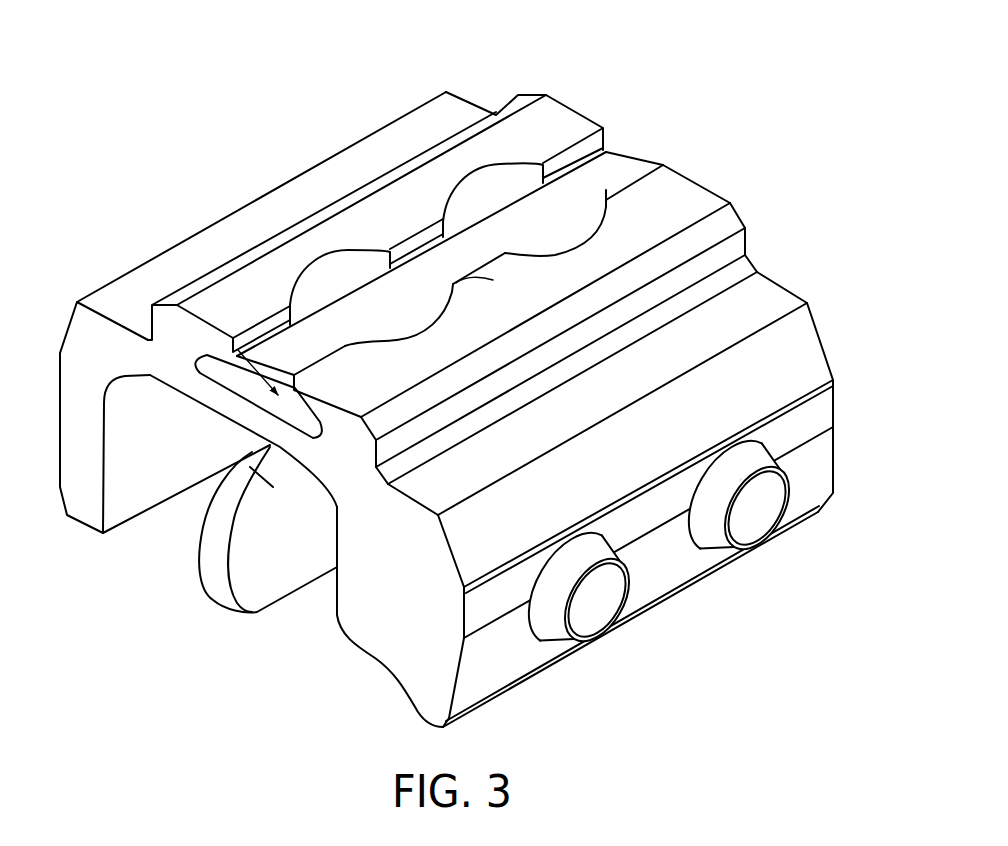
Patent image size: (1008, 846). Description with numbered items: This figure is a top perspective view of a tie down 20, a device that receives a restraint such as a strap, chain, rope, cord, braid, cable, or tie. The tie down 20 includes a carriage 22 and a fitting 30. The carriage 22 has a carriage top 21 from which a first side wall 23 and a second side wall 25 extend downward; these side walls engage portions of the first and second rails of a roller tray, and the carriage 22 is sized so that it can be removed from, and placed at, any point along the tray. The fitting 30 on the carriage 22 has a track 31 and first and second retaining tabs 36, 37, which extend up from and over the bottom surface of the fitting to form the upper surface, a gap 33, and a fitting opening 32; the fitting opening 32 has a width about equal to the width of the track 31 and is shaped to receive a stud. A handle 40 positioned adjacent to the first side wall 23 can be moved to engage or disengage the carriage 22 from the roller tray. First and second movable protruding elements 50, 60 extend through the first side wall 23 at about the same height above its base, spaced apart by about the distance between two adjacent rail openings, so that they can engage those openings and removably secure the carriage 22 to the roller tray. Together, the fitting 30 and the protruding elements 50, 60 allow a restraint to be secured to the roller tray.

The tie down 20 is at (100, 36).
The carriage top 21 is at (750, 313).
The carriage 22 is at (97, 338).
The first side wall 23 is at (73, 402).
The second side wall 25 is at (405, 662).
The fitting 30 is at (233, 285).
The track 31 is at (147, 323).
The fitting opening 32 is at (545, 215).
The gap 33 is at (608, 162).
The first retaining tab 36 is at (637, 192).
The second retaining tab 37 is at (549, 135).
The handle 40 is at (213, 580).
The first movable protruding element 50 is at (600, 615).
The second movable protruding element 60 is at (760, 527).